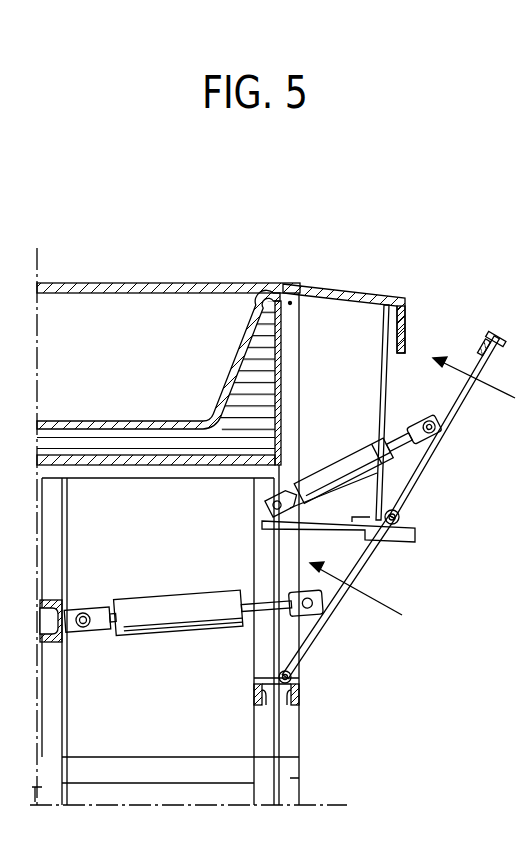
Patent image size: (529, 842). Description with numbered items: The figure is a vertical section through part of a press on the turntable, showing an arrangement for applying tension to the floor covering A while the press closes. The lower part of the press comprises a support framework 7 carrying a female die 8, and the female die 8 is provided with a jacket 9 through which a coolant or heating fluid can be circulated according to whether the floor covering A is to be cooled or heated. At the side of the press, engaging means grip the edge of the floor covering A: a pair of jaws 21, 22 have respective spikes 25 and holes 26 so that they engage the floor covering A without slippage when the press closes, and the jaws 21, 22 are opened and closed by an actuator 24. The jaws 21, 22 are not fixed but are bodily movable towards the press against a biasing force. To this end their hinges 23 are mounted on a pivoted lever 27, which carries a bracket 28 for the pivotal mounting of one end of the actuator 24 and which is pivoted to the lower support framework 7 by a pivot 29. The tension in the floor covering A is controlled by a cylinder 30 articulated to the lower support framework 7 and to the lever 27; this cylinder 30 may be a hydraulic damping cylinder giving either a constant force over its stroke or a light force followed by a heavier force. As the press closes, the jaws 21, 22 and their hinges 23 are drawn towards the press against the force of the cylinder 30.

The floor covering A is at (160, 283).
The support framework 7 is at (66, 692).
The female die 8 is at (155, 420).
The jacket 9 is at (290, 383).
The jaw 21 is at (392, 319).
The jaw 22 is at (499, 340).
The hinge 23 is at (401, 511).
The actuator 24 is at (340, 467).
The spike 25 is at (405, 312).
The hole 26 is at (484, 337).
The lever 27 is at (372, 551).
The bracket 28 is at (312, 530).
The pivot 29 is at (291, 677).
The cylinder 30 is at (203, 608).